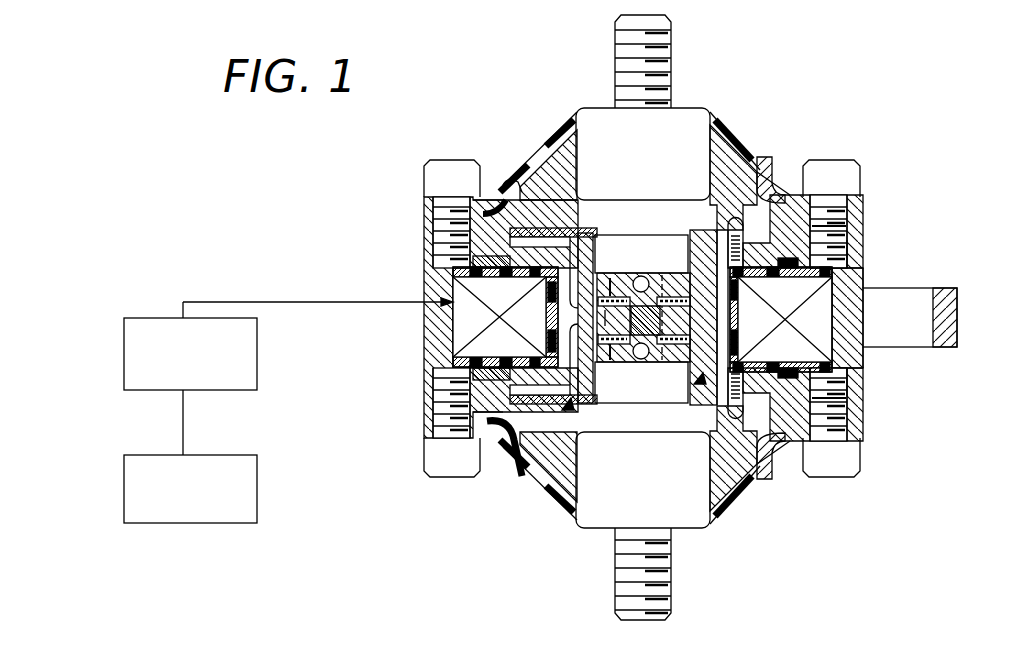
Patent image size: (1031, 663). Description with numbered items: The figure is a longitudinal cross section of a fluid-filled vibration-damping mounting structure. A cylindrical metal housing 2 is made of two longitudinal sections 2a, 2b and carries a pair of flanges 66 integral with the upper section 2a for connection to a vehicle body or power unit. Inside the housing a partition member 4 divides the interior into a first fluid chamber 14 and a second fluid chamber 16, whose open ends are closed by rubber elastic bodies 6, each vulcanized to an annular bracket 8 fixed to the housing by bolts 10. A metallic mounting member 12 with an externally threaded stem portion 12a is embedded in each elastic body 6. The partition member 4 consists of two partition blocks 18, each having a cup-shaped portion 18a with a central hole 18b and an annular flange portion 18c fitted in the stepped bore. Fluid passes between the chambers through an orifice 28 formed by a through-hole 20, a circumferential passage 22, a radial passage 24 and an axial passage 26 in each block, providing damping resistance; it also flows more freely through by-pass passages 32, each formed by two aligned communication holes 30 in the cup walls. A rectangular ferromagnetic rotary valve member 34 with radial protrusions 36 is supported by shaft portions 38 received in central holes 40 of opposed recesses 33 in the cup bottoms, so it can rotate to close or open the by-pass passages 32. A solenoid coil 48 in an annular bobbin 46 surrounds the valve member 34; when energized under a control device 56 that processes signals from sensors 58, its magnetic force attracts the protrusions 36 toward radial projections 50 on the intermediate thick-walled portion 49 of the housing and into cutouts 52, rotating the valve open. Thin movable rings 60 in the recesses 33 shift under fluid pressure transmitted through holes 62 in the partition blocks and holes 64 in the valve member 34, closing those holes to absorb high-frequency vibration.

The metal housing 2 is at (410, 353).
The upper longitudinal section 2a is at (852, 262).
The lower longitudinal section 2b is at (858, 420).
The partition member 4 is at (545, 222).
The elastic body 6 is at (562, 158).
The annular bracket 8 is at (490, 192).
The bolt 10 is at (833, 160).
The mounting member 12 is at (589, 114).
The externally threaded stem portion 12a is at (672, 41).
The first fluid chamber 14 is at (727, 205).
The second fluid chamber 16 is at (728, 447).
The partition block 18 is at (632, 225).
The cup-shaped portion 18a is at (706, 230).
The central hole 18b is at (642, 371).
The annular flange portion 18c is at (478, 237).
The through-hole 20 is at (768, 198).
The circumferential passage 22 is at (842, 228).
The radial passage 24 is at (473, 262).
The axial passage 26 is at (583, 226).
The orifice 28 is at (573, 425).
The communication hole 30 is at (714, 236).
The by-pass passage 32 is at (662, 410).
The recess 33 is at (858, 300).
The rotary valve member 34 is at (586, 323).
The radial protrusion 36 is at (665, 340).
The shaft portion 38 is at (643, 277).
The central hole 40 is at (637, 232).
The annular bobbin 46 is at (450, 270).
The solenoid coil 48 is at (834, 348).
The intermediate thick-walled portion 49 is at (384, 302).
The radial projection 50 is at (543, 350).
The cutout 52 is at (543, 307).
The control device 56 is at (124, 367).
The sensor 58 is at (124, 491).
The movable ring 60 is at (756, 294).
The hole 62 is at (612, 262).
The hole 64 is at (608, 338).
The flange 66 is at (937, 290).